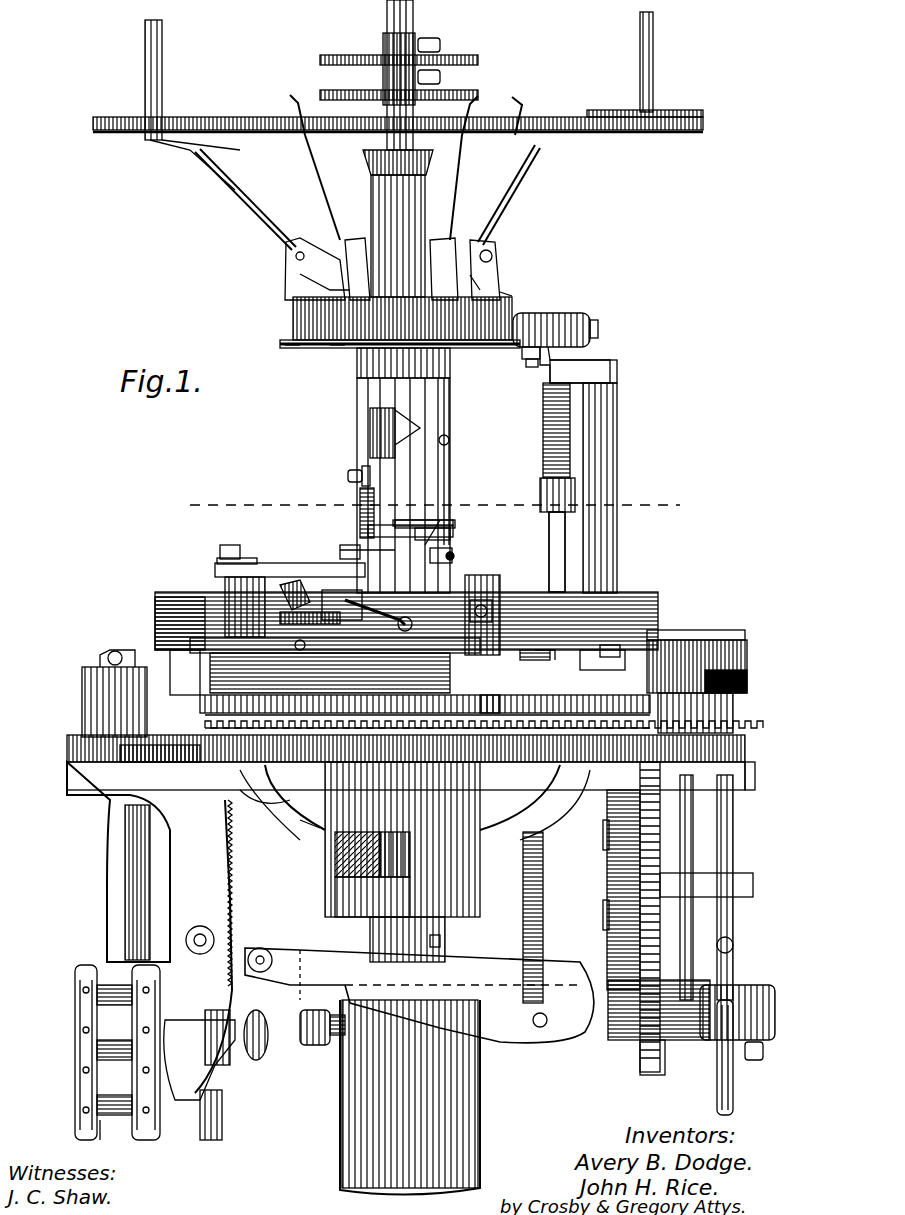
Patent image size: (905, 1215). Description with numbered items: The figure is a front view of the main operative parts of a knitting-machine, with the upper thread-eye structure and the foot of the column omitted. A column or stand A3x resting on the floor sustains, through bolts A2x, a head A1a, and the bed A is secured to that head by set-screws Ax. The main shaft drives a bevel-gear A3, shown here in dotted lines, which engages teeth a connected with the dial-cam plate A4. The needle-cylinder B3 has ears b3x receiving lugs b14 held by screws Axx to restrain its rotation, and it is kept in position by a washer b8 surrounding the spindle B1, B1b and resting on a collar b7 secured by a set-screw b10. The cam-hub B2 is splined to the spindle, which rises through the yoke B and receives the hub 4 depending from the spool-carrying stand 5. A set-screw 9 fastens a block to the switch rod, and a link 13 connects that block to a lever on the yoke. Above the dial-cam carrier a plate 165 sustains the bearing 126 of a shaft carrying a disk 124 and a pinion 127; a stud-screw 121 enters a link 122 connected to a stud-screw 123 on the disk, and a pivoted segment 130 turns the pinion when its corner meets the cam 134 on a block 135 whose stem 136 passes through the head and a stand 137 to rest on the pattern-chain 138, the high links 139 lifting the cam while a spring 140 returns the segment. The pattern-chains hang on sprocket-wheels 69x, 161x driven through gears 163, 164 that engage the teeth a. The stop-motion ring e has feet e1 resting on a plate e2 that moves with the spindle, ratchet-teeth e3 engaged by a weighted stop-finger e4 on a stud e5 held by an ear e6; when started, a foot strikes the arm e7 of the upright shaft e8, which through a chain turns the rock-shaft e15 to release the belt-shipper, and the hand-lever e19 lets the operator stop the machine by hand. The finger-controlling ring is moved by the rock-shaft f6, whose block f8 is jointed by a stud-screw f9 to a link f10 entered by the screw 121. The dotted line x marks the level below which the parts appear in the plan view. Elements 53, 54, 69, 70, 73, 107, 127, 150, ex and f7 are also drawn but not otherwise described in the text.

The hub 4 is at (360, 396).
The spool-carrying stand 5 is at (398, 148).
The set-screw 9 is at (348, 477).
The link 13 is at (360, 505).
The bracket 53 is at (555, 645).
The clamp 54 is at (600, 645).
The chain 69 is at (101, 1052).
The sprocket-wheel 69x is at (112, 1118).
The shaft 70 is at (112, 667).
The gear 73 is at (360, 690).
The link 107 is at (300, 580).
The stud-screw 121 is at (391, 529).
The link 122 is at (340, 552).
The stud-screw 123 is at (237, 541).
The disk 124 is at (215, 570).
The bearing 126 is at (225, 590).
The pinion 127 is at (335, 663).
The segment 130 is at (310, 624).
The cam 134 is at (720, 630).
The block 135 is at (748, 650).
The stem 136 is at (733, 712).
The stand 137 is at (755, 772).
The pattern-chain 138 is at (735, 960).
The high links 139 is at (733, 940).
The spring 140 is at (367, 607).
The stud 150 is at (510, 650).
The sprocket-wheel 161x is at (178, 1110).
The gear 163 is at (660, 795).
The gear 164 is at (232, 925).
The plate 165 is at (155, 625).
The bed A is at (67, 758).
The bevel-gear A3 is at (174, 862).
The dial-cam plate A4 is at (235, 738).
The set-screws Ax is at (285, 805).
The screws Axx is at (545, 800).
The head A1a is at (543, 888).
The bolts A2x is at (317, 1036).
The column A3x is at (470, 1080).
The yoke B is at (660, 600).
The spindle B1 is at (372, 435).
The spindle B1b is at (445, 888).
The cam-hub B2 is at (345, 915).
The needle-cylinder B3 is at (335, 778).
The ears b3x is at (470, 800).
The collar b7 is at (372, 937).
The washer b8 is at (345, 895).
The set-screw b10 is at (442, 940).
The lugs b14 is at (300, 822).
The teeth a is at (285, 730).
The stop-motion ring e is at (293, 312).
The feet e1 is at (338, 347).
The plate e2 is at (290, 347).
The ratchet-teeth e3 is at (505, 293).
The stop-finger e4 is at (295, 218).
The stud e5 is at (480, 280).
The ear e6 is at (300, 274).
The arm e7 is at (525, 315).
The upright shaft e8 is at (549, 536).
The screw rod ex is at (543, 415).
The rock-shaft e15 is at (419, 995).
The hand-lever e19 is at (545, 1030).
The rock-shaft f6 is at (452, 404).
The collar f7 is at (455, 512).
The block f8 is at (455, 550).
The stud-screw f9 is at (455, 524).
The link f10 is at (450, 500).
The dotted line x is at (429, 503).